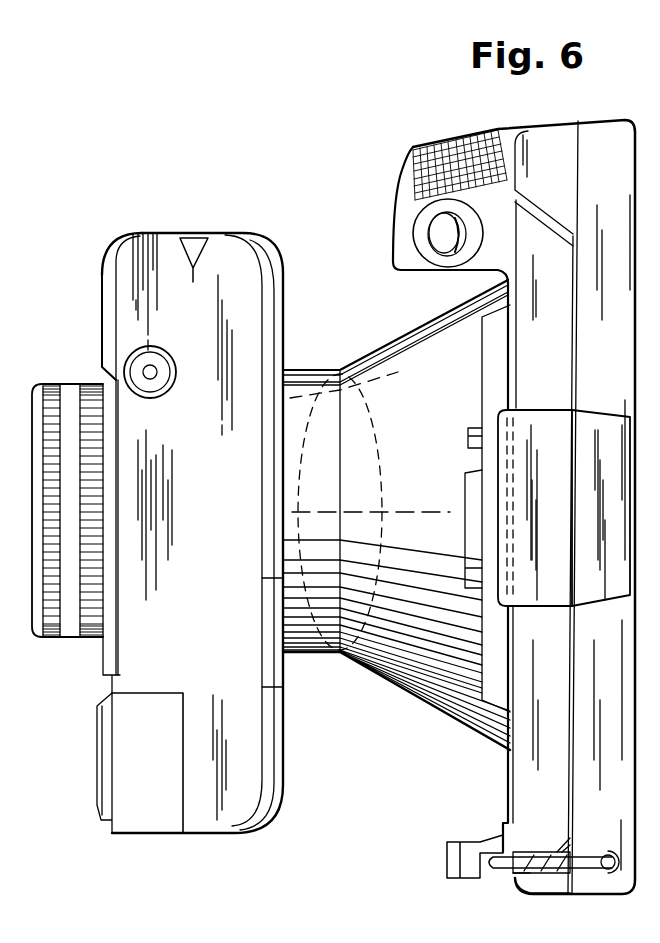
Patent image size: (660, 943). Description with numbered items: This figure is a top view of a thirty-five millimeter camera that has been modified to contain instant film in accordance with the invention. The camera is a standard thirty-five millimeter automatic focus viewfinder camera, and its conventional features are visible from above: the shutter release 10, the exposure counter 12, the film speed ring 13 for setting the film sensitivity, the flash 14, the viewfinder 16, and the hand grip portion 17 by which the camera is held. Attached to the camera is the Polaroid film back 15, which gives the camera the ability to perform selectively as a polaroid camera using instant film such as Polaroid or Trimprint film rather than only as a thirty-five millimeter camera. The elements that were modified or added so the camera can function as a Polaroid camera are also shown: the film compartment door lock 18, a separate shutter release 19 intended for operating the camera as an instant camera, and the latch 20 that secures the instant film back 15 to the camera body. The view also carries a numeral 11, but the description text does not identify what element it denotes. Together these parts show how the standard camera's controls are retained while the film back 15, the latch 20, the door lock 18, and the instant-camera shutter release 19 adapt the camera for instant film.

The shutter release 10 is at (127, 358).
The camera body 11 is at (283, 783).
The exposure counter 12 is at (197, 236).
The film speed ring 13 is at (62, 643).
The flash 14 is at (97, 800).
The Polaroid film back 15 is at (641, 310).
The viewfinder 16 is at (604, 398).
The hand grip portion 17 is at (412, 148).
The film compartment door lock 18 is at (487, 870).
The shutter release for an instant camera 19 is at (434, 243).
The latch for the instant film back 20 is at (462, 495).